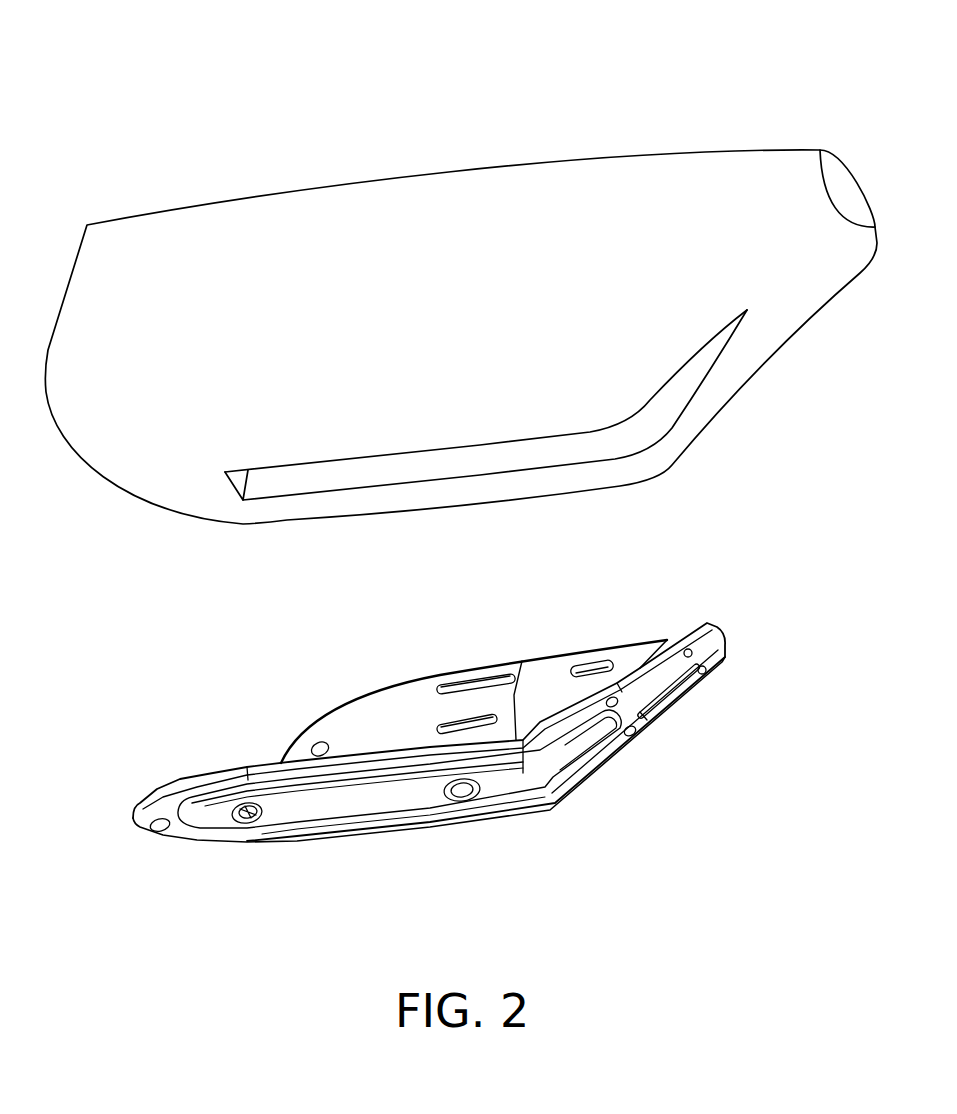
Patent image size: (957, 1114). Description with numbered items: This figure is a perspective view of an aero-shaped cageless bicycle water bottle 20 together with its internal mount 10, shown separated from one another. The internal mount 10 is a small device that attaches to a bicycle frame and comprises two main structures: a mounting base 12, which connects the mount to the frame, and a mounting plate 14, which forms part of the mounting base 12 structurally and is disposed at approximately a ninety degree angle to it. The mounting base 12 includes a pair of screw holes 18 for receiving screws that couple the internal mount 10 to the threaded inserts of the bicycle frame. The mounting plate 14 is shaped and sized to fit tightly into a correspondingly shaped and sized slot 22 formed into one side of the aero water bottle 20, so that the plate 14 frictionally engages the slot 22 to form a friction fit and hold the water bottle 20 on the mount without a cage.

The internal mount 10 is at (197, 683).
The mounting base 12 is at (388, 762).
The mounting plate 14 is at (548, 673).
The screw holes 18 is at (247, 822).
The aero water bottle 20 is at (435, 112).
The slot 22 is at (650, 420).